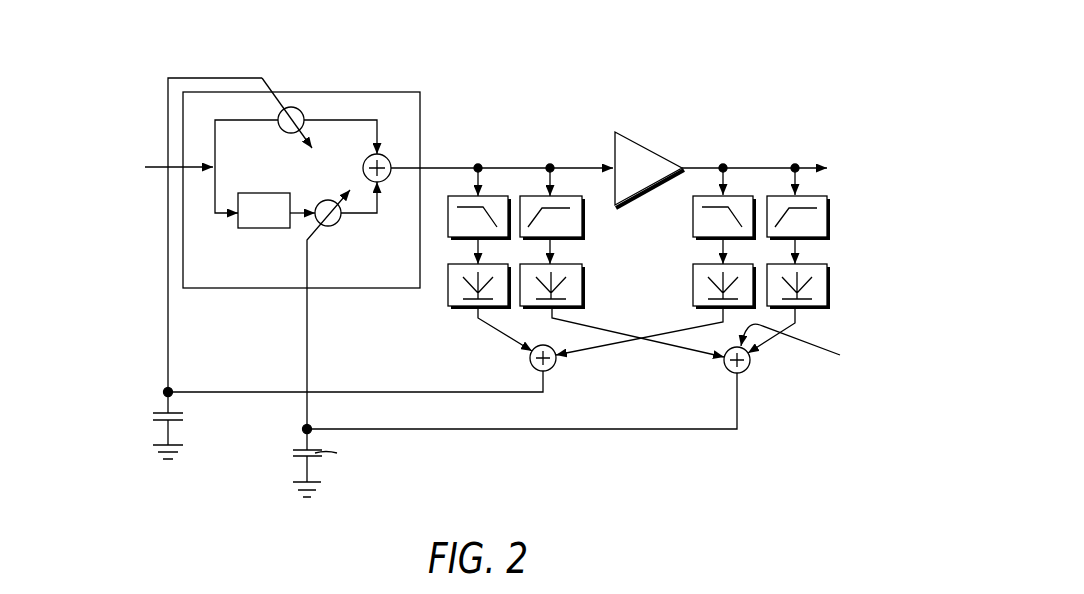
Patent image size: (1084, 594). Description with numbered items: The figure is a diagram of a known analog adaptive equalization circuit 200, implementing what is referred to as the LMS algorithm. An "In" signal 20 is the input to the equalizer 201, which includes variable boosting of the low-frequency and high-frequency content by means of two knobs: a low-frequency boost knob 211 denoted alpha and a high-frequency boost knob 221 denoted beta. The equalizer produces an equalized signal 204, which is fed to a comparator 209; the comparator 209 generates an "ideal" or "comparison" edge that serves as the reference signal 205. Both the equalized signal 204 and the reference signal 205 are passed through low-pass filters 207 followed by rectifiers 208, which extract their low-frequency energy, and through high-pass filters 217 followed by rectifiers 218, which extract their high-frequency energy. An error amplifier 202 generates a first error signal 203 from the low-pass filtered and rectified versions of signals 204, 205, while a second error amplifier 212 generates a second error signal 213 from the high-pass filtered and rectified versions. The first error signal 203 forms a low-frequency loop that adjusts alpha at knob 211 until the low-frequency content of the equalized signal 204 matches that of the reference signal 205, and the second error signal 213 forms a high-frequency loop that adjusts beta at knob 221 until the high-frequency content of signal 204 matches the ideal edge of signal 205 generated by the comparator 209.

The "In" signal 20 is at (153, 172).
The compensation circuit 200 is at (768, 95).
The equalizer 201 is at (343, 91).
The error amplifier 202 is at (550, 345).
The first error signal 203 is at (390, 392).
The equalized signal 204 is at (435, 168).
The reference signal 205 is at (813, 168).
The low-pass filter 207 is at (467, 196).
The rectifier 208 is at (450, 264).
The comparator 209 is at (637, 143).
The low-frequency boost knob 211 is at (304, 118).
The error amplifier 212 is at (728, 349).
The second error signal 213 is at (550, 430).
The high-pass filter 217 is at (560, 196).
The rectifier 218 is at (586, 310).
The high-frequency boost knob 221 is at (302, 196).